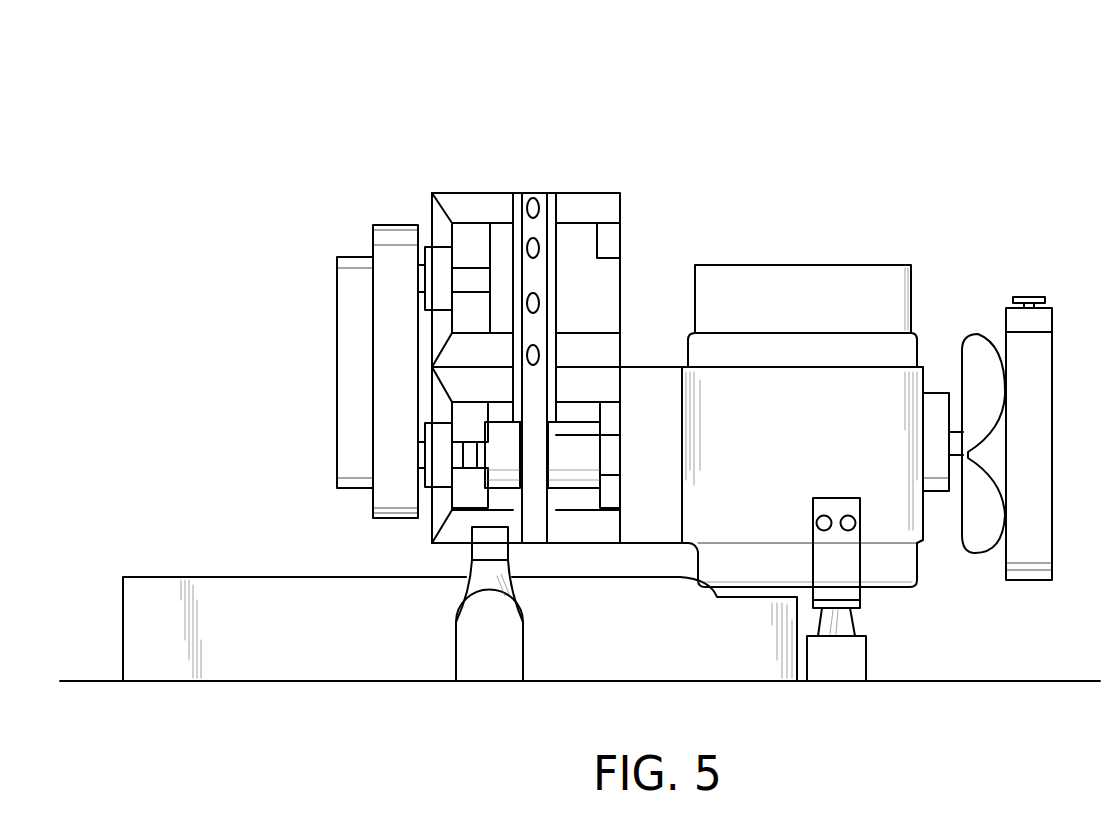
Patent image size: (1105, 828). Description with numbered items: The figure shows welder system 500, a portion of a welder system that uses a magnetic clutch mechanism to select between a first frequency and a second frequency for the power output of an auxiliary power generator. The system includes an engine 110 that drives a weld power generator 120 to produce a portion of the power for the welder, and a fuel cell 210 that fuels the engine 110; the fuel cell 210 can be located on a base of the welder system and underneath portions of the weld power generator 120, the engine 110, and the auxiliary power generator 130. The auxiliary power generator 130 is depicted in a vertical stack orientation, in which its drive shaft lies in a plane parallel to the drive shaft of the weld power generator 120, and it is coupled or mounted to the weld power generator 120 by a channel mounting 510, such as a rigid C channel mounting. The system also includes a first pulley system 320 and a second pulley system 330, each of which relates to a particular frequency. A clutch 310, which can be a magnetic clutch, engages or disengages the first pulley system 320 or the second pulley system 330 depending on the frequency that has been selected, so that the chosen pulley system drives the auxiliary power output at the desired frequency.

The engine 110 is at (893, 307).
The weld power generator 120 is at (608, 383).
The auxiliary power generator 130 is at (612, 207).
The fuel cell 210 is at (293, 660).
The clutch 310 is at (437, 468).
The first pulley system 320 is at (393, 228).
The second pulley system 330 is at (353, 262).
The welder system 500 is at (407, 84).
The channel mounting 510 is at (533, 203).